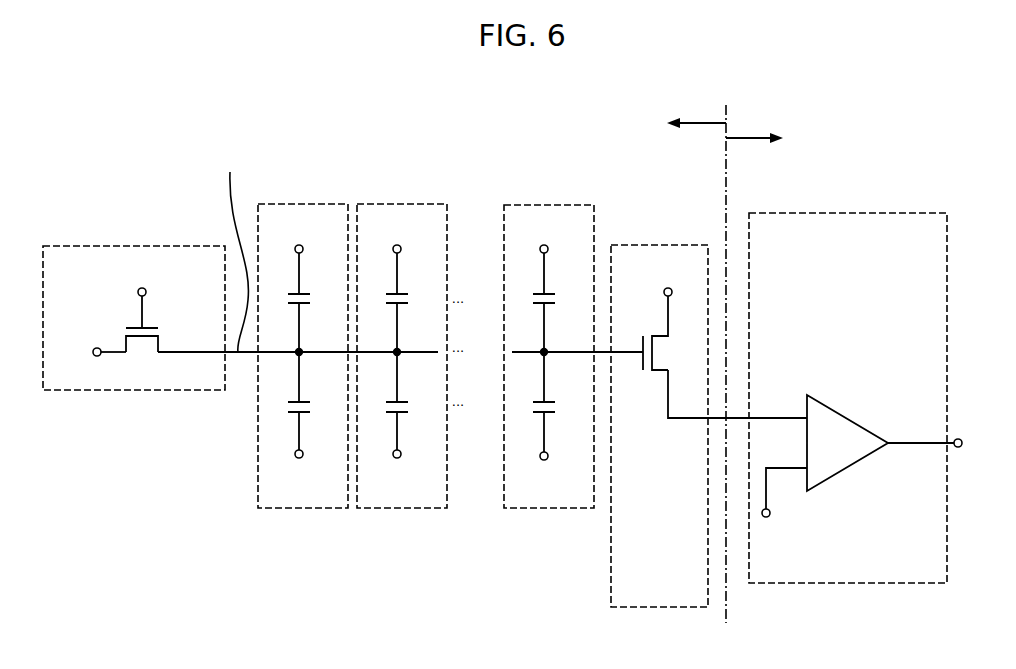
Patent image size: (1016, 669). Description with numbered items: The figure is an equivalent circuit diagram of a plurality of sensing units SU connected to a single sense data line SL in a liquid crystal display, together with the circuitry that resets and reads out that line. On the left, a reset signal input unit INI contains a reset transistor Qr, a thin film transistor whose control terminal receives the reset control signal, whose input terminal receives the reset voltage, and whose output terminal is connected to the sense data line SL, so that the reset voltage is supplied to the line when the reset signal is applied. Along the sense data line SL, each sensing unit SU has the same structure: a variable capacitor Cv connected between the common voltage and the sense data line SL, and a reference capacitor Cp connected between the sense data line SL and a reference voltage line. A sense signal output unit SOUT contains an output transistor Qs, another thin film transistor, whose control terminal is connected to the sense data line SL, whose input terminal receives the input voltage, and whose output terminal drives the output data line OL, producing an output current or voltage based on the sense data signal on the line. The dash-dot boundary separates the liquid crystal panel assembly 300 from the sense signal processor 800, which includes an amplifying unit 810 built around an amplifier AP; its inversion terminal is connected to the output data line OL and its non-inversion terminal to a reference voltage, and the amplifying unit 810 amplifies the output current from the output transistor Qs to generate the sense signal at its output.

The liquid crystal panel assembly 300 is at (696, 114).
The sense signal processor 800 is at (754, 129).
The amplifying unit 810 is at (871, 213).
The reset signal input unit INI is at (103, 246).
The sense data line SL is at (235, 252).
The sensing unit SU is at (300, 204).
The sense signal output unit SOUT is at (659, 245).
The reset transistor Qr is at (115, 323).
The output transistor Qs is at (666, 318).
The variable capacitor Cv is at (433, 300).
The reference capacitor Cp is at (434, 409).
The output data line OL is at (664, 416).
The amplifier AP is at (845, 471).